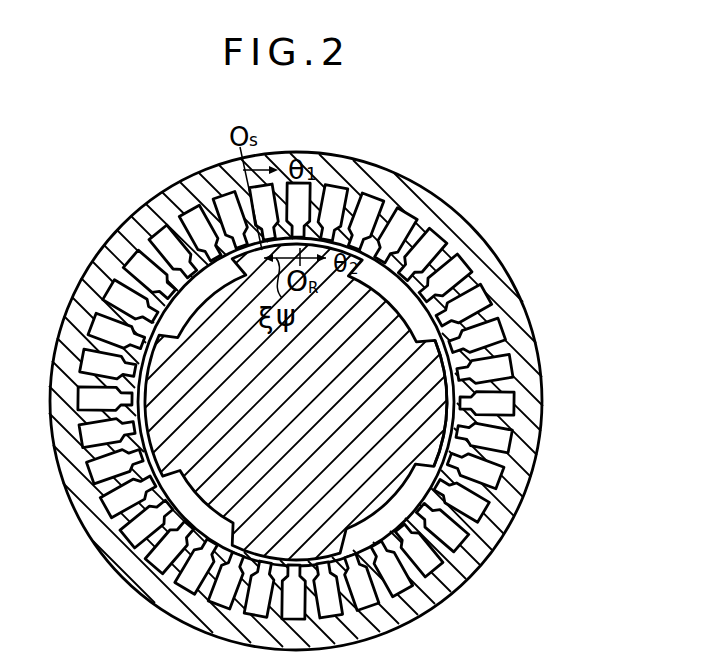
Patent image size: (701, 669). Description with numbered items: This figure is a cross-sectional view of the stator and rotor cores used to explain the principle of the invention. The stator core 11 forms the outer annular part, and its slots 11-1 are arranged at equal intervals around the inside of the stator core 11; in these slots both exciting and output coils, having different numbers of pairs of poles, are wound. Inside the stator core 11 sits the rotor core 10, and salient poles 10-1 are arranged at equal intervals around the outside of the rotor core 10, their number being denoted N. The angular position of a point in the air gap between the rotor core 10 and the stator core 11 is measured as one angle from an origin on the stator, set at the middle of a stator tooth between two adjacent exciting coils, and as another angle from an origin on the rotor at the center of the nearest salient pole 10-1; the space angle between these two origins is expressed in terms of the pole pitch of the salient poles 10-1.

The rotor core 10 is at (343, 357).
The salient poles 10-1 is at (438, 418).
The stator core 11 is at (455, 240).
The slots 11-1 is at (350, 193).